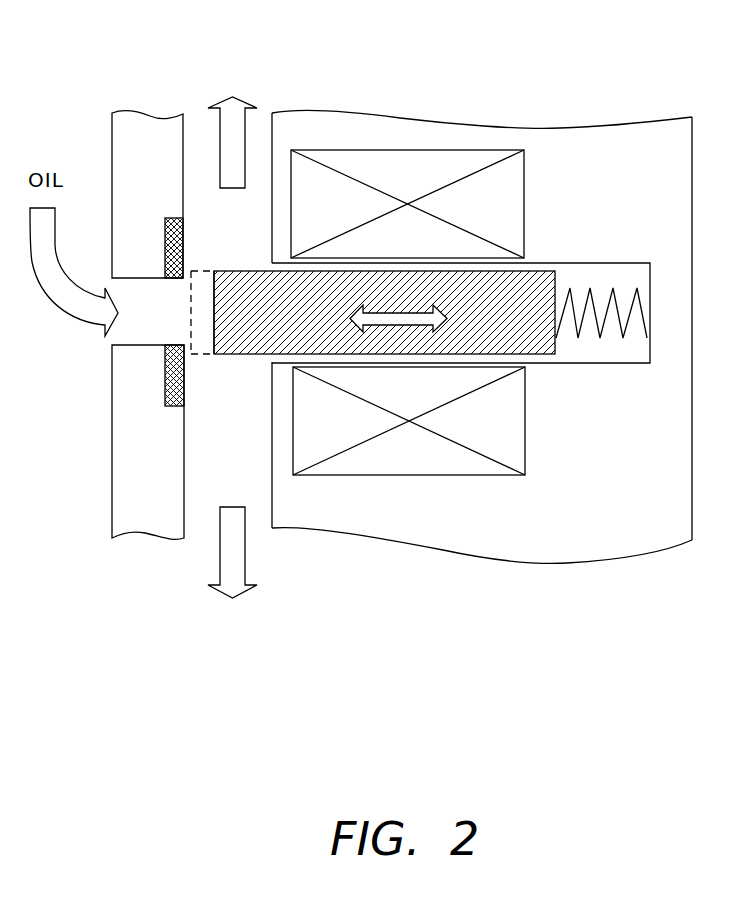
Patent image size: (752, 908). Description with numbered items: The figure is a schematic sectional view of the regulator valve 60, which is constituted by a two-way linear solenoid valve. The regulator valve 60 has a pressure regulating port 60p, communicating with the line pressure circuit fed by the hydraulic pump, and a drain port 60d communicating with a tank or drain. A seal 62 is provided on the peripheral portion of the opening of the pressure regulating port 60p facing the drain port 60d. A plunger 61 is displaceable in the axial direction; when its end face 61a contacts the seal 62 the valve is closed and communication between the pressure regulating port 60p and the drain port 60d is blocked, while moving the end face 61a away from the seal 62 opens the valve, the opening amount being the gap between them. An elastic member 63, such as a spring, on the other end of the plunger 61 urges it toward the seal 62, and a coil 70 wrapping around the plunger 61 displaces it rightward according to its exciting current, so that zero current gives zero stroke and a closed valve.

The regulator valve 60 is at (561, 607).
The drain port 60d is at (258, 131).
The pressure regulating port 60p is at (88, 349).
The plunger 61 is at (402, 295).
The end face 61a is at (214, 297).
The seal 62 is at (165, 228).
The elastic member 63 is at (612, 298).
The coil 70 is at (478, 163).